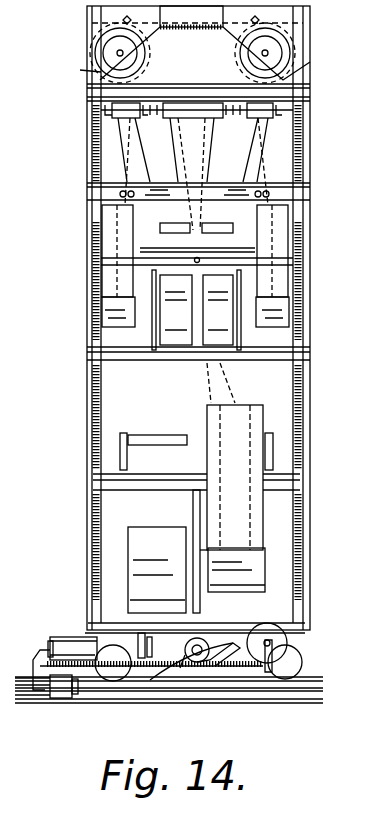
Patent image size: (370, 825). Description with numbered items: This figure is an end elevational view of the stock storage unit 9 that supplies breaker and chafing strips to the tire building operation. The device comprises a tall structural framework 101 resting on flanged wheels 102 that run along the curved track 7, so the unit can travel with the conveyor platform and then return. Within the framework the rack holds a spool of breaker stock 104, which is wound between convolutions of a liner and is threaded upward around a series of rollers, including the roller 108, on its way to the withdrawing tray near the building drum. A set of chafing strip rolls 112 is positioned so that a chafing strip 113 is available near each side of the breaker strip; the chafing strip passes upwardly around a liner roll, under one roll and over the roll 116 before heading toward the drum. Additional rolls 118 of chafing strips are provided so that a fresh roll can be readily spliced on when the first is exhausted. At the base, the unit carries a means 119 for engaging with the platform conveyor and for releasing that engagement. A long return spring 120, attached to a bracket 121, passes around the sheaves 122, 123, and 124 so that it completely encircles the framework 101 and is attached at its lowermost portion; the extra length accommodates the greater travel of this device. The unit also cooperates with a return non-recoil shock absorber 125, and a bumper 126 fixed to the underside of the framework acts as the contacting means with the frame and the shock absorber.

The curved track 7 is at (326, 686).
The stock storage unit 9 is at (333, 219).
The structural framework 101 is at (296, 408).
The flanged wheels 102 is at (303, 662).
The breaker stock 104 is at (265, 556).
The roller 108 is at (178, 117).
The chafing strip rolls 112 is at (300, 296).
The chafing strip 113 is at (123, 163).
The roll 116 is at (305, 118).
The additional rolls of chafing strips 118 is at (260, 334).
The engaging means 119 is at (195, 673).
The return spring 120 is at (157, 670).
The bracket 121 is at (37, 682).
The sheave 122 is at (288, 647).
The sheave 123 is at (300, 66).
The sheave 124 is at (82, 70).
The return non-recoil shock absorber 125 is at (53, 629).
The bumper 126 is at (138, 663).